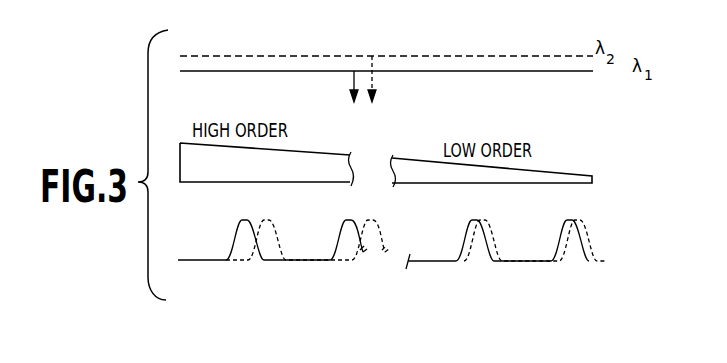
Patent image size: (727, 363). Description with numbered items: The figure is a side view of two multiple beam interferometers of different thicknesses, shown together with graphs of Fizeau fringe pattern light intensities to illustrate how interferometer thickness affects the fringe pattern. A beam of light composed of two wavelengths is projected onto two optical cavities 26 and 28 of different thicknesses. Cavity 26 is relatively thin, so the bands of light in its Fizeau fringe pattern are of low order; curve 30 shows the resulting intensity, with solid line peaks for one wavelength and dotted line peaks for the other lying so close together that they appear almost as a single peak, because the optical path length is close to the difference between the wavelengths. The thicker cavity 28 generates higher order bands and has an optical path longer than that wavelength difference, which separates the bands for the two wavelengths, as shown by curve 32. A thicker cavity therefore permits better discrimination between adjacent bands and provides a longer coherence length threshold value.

The optical cavity 26 is at (573, 174).
The optical cavity 28 is at (180, 143).
The curve 30 is at (447, 261).
The curve 32 is at (208, 261).